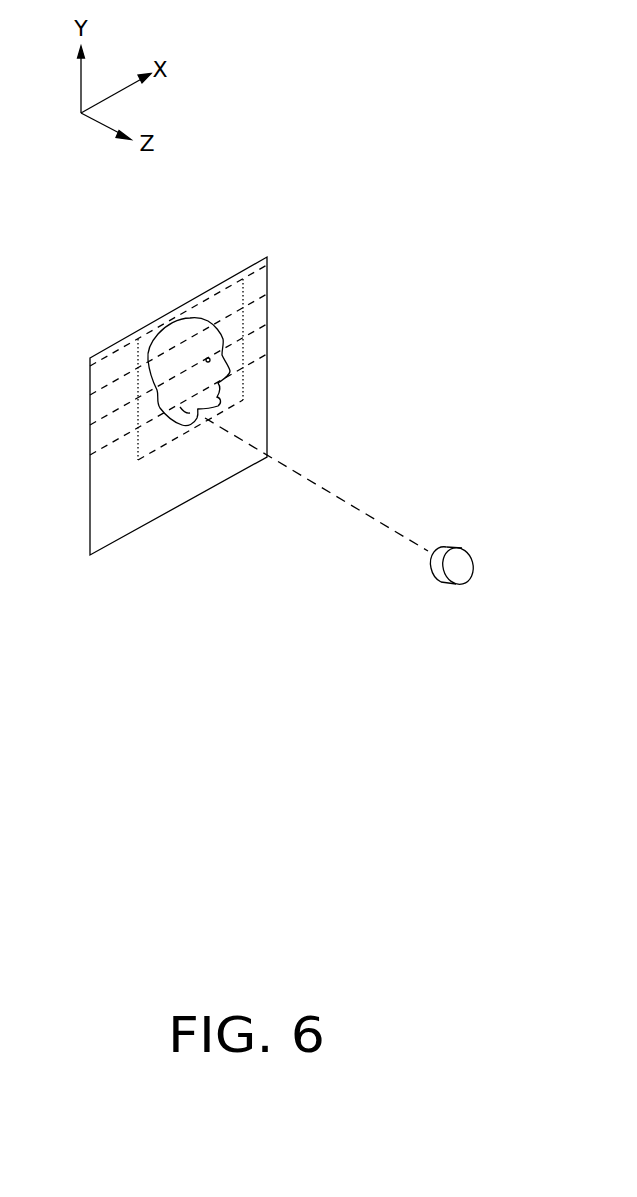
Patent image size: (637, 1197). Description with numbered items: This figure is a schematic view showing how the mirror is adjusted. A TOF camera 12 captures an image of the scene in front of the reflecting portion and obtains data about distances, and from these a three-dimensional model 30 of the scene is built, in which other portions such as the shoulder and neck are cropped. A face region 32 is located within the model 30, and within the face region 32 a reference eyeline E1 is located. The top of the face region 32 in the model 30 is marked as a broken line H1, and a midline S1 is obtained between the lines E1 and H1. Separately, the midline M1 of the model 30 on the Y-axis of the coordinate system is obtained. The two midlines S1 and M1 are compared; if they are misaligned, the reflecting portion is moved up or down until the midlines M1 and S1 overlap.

The TOF camera 12 is at (473, 560).
The 3D model 30 is at (110, 326).
The face region 32 is at (204, 297).
The broken line H1 is at (162, 326).
The midline S1 is at (162, 356).
The reference eyeline E1 is at (162, 387).
The midline M1 is at (162, 416).